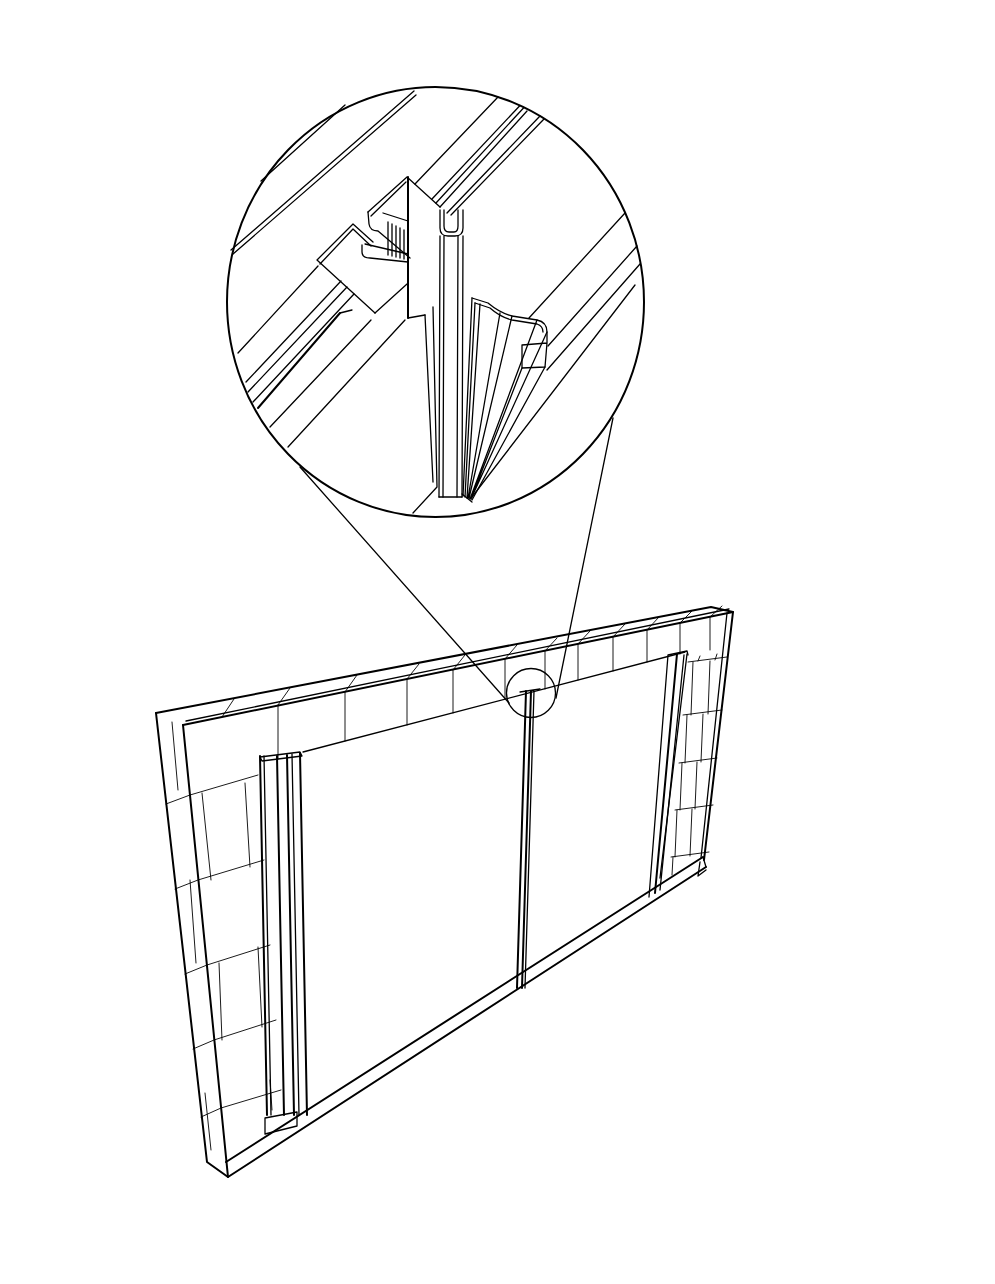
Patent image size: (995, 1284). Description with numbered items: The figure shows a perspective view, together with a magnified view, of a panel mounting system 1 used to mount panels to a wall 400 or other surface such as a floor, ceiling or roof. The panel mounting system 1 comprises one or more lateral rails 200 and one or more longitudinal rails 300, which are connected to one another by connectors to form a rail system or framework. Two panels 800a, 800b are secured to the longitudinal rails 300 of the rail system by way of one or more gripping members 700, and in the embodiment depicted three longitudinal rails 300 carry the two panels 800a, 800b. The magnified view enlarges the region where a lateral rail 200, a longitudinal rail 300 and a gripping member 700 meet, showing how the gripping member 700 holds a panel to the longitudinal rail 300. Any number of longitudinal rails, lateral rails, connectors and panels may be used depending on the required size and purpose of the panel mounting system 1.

The panel mounting system 1 is at (157, 160).
The lateral rail 200 is at (519, 94).
The longitudinal rail 300 is at (313, 270).
The wall 400 is at (215, 837).
The gripping member 700 is at (498, 305).
The panel 800a is at (433, 871).
The panel 800b is at (626, 822).